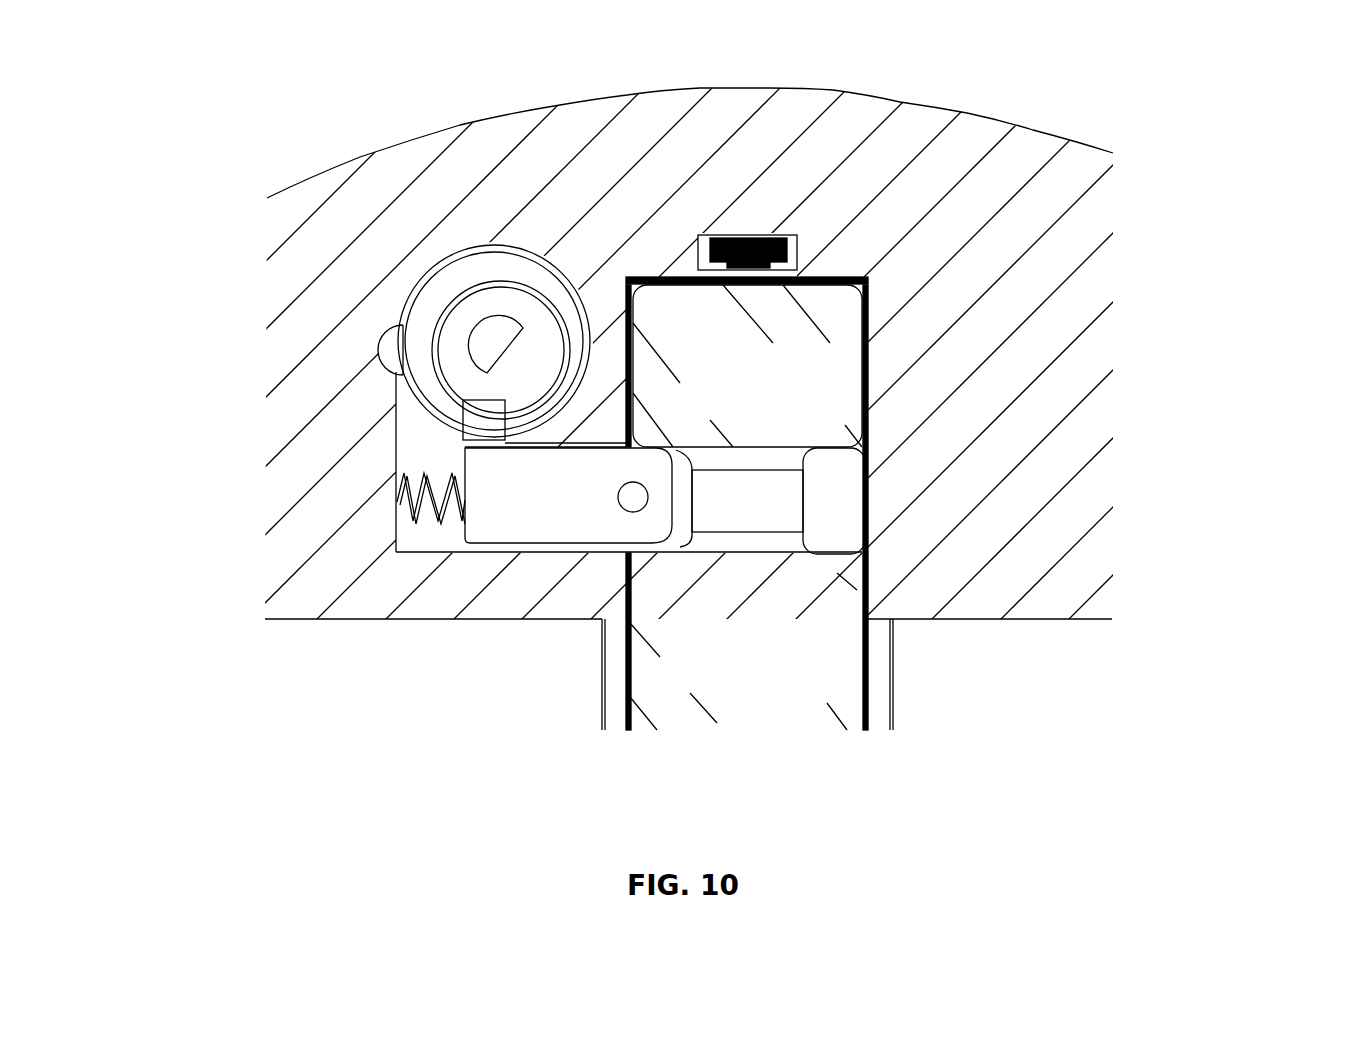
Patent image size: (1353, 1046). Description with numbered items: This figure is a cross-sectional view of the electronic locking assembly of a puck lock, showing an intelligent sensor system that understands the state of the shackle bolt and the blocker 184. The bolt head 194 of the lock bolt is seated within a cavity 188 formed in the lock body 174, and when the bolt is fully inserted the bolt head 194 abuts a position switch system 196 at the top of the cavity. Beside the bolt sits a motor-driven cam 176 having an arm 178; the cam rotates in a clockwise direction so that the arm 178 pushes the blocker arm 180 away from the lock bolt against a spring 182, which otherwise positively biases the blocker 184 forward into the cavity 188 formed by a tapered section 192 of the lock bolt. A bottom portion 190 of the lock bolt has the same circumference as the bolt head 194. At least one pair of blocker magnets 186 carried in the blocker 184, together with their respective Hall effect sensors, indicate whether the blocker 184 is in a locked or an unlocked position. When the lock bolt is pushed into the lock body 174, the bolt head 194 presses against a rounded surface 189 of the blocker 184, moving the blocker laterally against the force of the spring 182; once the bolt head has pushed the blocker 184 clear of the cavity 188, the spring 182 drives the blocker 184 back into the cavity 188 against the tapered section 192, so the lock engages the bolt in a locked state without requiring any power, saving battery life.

The lock body 174 is at (458, 190).
The cam 176 is at (517, 407).
The arm 178 is at (480, 425).
The blocker arm 180 is at (478, 428).
The spring 182 is at (412, 515).
The blocker 184 is at (537, 522).
The blocker magnets 186 is at (470, 613).
The cavity 188 is at (850, 518).
The rounded surface 189 is at (665, 540).
The bottom portion 190 is at (773, 693).
The tapered section 192 is at (723, 515).
The bolt head 194 is at (700, 372).
The position switch system 196 is at (755, 235).